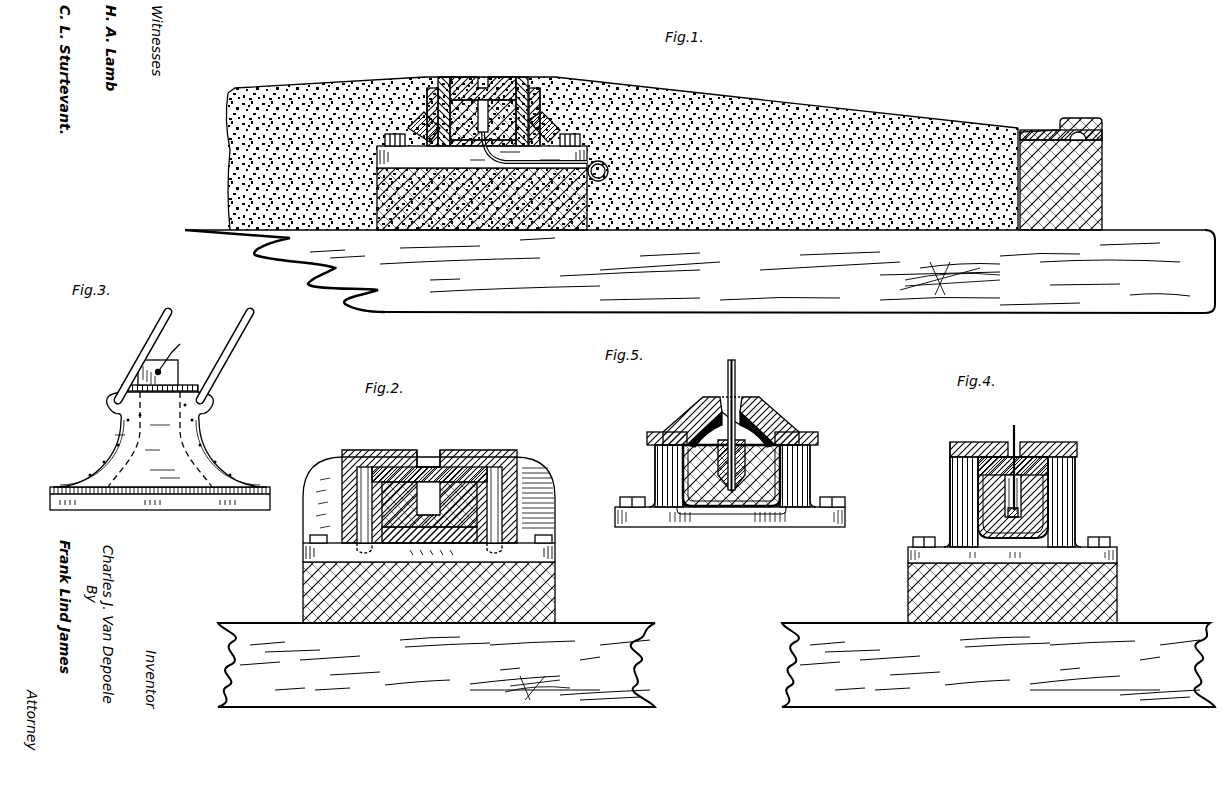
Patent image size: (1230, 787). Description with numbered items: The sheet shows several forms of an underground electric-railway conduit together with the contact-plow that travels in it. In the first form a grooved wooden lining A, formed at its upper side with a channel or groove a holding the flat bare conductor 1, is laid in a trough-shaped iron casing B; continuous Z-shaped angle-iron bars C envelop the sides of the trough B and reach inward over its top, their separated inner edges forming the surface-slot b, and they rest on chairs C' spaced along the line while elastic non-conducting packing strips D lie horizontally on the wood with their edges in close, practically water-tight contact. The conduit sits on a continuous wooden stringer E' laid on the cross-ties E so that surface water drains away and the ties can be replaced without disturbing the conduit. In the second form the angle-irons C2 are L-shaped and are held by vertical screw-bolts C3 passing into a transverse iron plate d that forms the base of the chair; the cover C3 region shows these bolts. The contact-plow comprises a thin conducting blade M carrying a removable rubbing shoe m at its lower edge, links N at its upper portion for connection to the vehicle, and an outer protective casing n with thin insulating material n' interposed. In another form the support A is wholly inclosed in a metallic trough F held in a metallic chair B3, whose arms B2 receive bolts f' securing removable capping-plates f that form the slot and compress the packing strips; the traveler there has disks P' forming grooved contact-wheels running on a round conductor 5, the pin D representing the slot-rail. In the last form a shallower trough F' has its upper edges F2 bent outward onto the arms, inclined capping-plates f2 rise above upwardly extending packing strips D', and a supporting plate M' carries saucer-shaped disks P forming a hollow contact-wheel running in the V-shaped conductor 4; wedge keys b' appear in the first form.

In FIG. 1, the conductor-supporting filling or lining A is at (460, 148).
In FIG. 2, the conductor-supporting filling or lining A is at (392, 543).
In FIG. 5, the conductor-supporting filling or lining A is at (690, 468).
In FIG. 4, the conductor-supporting filling or lining A is at (1050, 503).
In FIG. 1, the trough-shaped iron casing B is at (432, 88).
In FIG. 1, the Z-shaped angle-iron bars C is at (495, 95).
In FIG. 1, the chairs C' is at (545, 156).
In FIG. 2, the L-shaped angle-irons C2 is at (392, 450).
In FIG. 2, the vertical screw-bolts C3 is at (340, 470).
In FIG. 1, the elastic non-conducting packing strips D is at (483, 94).
In FIG. 2, the elastic non-conducting packing strips D is at (429, 454).
In FIG. 4, the elastic non-conducting packing strips D is at (1006, 462).
In FIG. 5, the upwardly extending packing strips D' is at (731, 417).
In FIG. 1, the cross-ties E is at (700, 271).
In FIG. 2, the cross-ties E is at (436, 665).
In FIG. 4, the cross-ties E is at (998, 665).
In FIG. 1, the continuous wooden stringer E' is at (482, 199).
In FIG. 2, the continuous wooden stringer E' is at (417, 592).
In FIG. 4, the continuous wooden stringer E' is at (1002, 593).
In FIG. 4, the metallic trough F is at (1026, 502).
In FIG. 5, the shallower metallic trough F' is at (749, 476).
In FIG. 5, the outwardly bent upper edges F2 is at (800, 458).
In FIG. 3, the conducting plate or blade M is at (171, 364).
In FIG. 5, the supporting plate M' is at (748, 425).
In FIG. 3, the links N is at (148, 345).
In FIG. 5, the saucer-shaped metallic disks P is at (803, 424).
In FIG. 4, the saucer-shaped metallic disks P is at (1042, 497).
In FIG. 5, the disks of the traveler P' is at (730, 524).
In FIG. 4, the disks of the traveler P' is at (930, 502).
In FIG. 2, the channel or groove a is at (428, 498).
In FIG. 1, the continuous surface-slot b is at (486, 92).
In FIG. 2, the continuous surface-slot b is at (428, 450).
In FIG. 5, the continuous surface-slot b is at (724, 386).
In FIG. 1, the wedge keys b' is at (472, 98).
In FIG. 2, the transverse iron plate d is at (555, 550).
In FIG. 4, the removable capping-plates f is at (1013, 437).
In FIG. 5, the bolts f' is at (667, 423).
In FIG. 4, the bolts f' is at (947, 439).
In FIG. 5, the inclined capping-plates f2 is at (770, 418).
In FIG. 3, the rubbing shoe m is at (190, 505).
In FIG. 3, the outer protective casing n is at (160, 439).
In FIG. 3, the thin insulating material n' is at (162, 379).
In FIG. 2, the bare conductor 1 is at (428, 507).
In FIG. 5, the V-shaped conductor 4 is at (740, 492).
In FIG. 4, the round conductor 5 is at (990, 512).
In FIG. 4, the chair arms B2 is at (983, 502).
In FIG. 4, the metallic chair B3 is at (1117, 553).